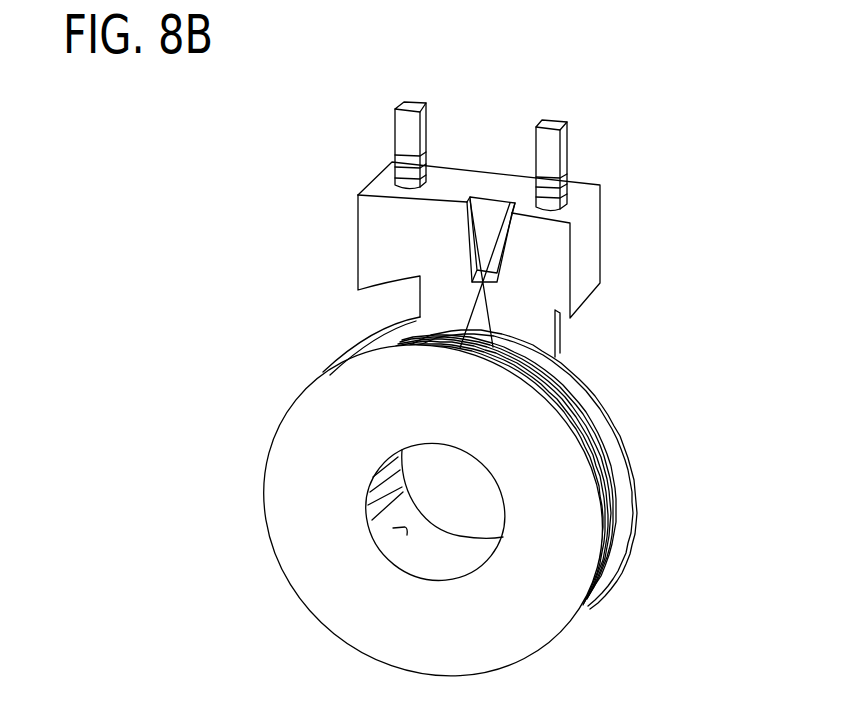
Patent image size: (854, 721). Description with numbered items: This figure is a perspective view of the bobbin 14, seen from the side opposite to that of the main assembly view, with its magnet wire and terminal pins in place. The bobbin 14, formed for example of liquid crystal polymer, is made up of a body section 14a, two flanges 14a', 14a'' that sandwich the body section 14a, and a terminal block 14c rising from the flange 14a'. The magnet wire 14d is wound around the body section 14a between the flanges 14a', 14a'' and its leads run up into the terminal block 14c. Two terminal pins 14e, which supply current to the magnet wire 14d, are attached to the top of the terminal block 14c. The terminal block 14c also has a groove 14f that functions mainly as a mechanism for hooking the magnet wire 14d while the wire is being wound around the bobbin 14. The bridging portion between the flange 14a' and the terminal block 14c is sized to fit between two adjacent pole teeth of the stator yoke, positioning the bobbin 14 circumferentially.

The bobbin 14 is at (222, 365).
The body section 14a is at (524, 529).
The flange 14a' is at (574, 469).
The flange 14a'' is at (473, 499).
The terminal block 14c is at (373, 233).
The magnet wire 14d is at (580, 404).
The terminal pins 14e is at (410, 104).
The groove 14f is at (491, 213).